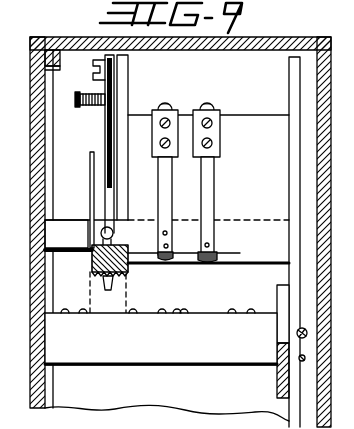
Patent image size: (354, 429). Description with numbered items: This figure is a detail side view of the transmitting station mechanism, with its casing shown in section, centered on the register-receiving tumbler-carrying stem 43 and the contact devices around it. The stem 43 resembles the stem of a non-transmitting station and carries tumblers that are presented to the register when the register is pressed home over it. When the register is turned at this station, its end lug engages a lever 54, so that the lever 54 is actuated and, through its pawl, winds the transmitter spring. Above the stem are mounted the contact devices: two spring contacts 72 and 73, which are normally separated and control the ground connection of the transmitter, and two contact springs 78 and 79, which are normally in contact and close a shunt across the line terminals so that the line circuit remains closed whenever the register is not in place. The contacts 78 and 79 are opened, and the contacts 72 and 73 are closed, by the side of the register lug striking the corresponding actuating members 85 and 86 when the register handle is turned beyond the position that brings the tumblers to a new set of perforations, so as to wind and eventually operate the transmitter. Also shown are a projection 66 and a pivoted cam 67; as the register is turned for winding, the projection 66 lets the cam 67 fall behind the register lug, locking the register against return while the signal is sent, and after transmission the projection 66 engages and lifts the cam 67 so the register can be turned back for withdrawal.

The register-receiving tumbler-carrying stem 43 is at (161, 337).
The lever 54 is at (277, 295).
The projection 66 is at (91, 268).
The pivoted cam 67 is at (90, 190).
The spring contact 72 is at (200, 105).
The spring contact 73 is at (214, 104).
The contact spring 78 is at (173, 107).
The contact spring 79 is at (160, 103).
The actuating member 85 is at (160, 269).
The actuating member 86 is at (207, 270).